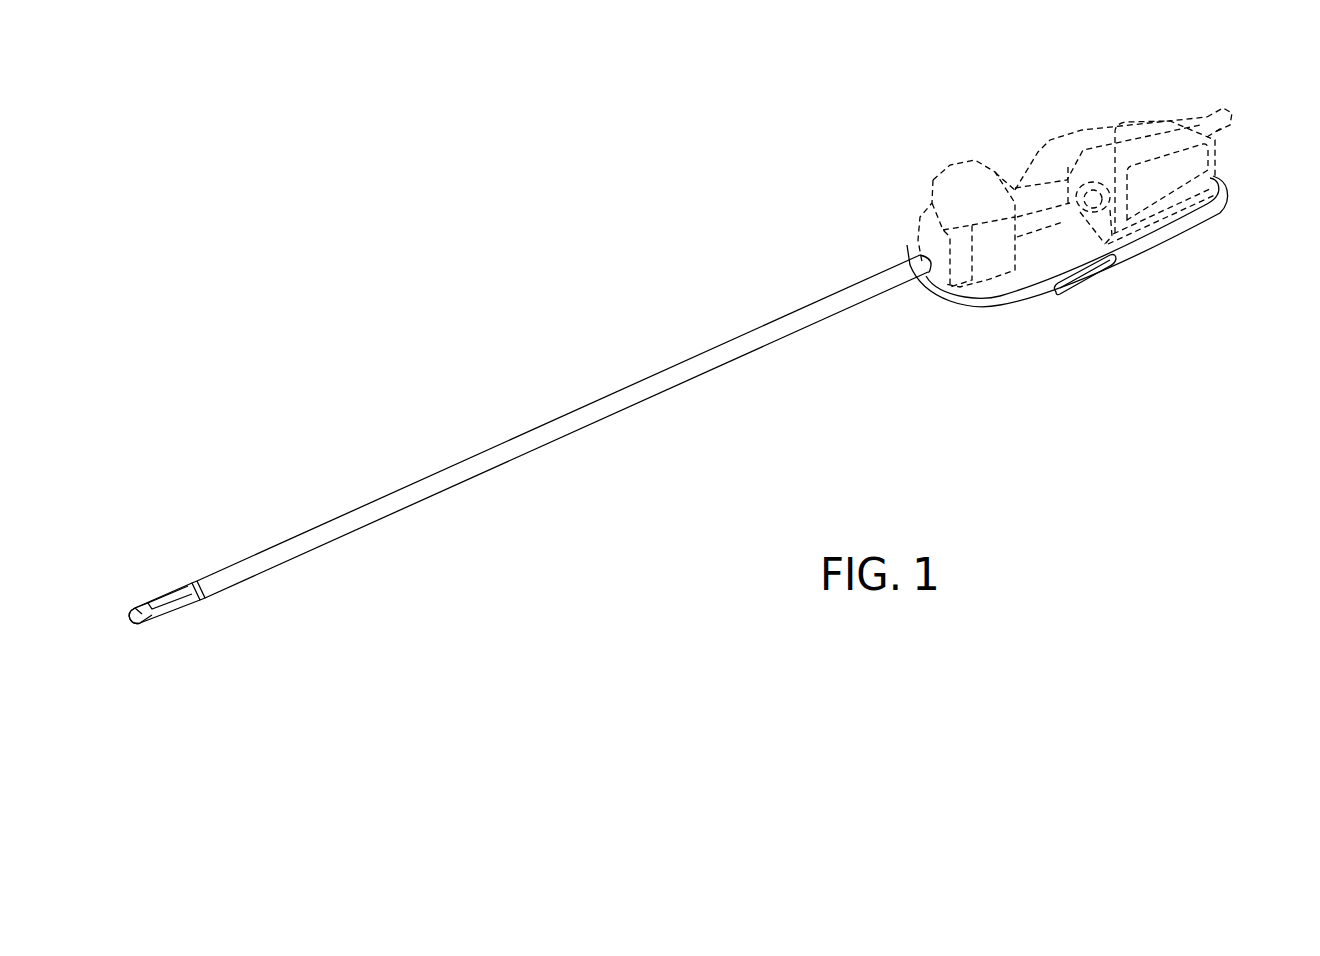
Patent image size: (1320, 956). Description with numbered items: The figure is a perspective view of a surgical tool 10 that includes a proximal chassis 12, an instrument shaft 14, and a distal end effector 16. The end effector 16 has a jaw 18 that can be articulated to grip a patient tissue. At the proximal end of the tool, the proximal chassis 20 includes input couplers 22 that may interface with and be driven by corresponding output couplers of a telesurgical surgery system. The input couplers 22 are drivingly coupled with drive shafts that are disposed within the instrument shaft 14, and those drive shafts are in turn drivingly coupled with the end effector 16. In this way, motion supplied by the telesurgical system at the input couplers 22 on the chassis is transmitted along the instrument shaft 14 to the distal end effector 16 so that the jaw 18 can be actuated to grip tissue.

The surgical tool 10 is at (820, 262).
The proximal chassis 12 is at (1072, 115).
The instrument shaft 14 is at (335, 540).
The distal end effector 16 is at (180, 633).
The jaw 18 is at (131, 625).
The proximal chassis 20 is at (1150, 248).
The input couplers 22 is at (1230, 157).